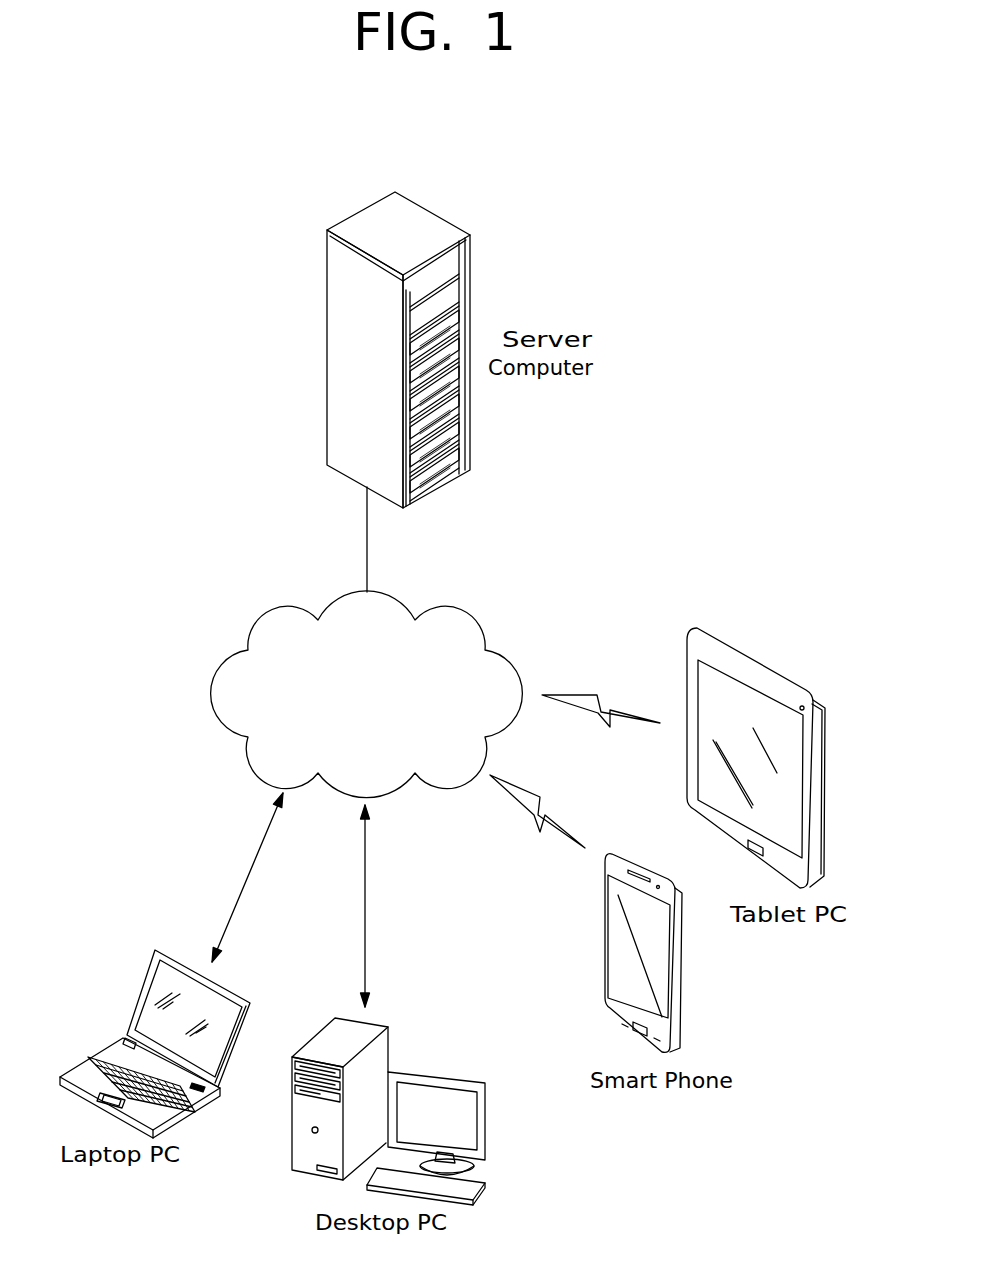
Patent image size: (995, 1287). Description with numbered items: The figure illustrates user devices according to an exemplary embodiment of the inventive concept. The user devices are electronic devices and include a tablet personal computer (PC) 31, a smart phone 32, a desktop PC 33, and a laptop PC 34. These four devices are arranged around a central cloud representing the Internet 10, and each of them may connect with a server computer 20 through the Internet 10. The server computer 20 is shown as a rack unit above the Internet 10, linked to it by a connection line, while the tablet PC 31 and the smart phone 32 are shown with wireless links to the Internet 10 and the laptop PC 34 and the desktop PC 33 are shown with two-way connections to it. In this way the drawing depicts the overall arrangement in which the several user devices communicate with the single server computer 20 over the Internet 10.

The Internet 10 is at (460, 612).
The server computer 20 is at (413, 217).
The tablet personal computer (PC) 31 is at (758, 668).
The smart phone 32 is at (682, 968).
The desktop PC 33 is at (375, 1030).
The laptop PC 34 is at (227, 985).